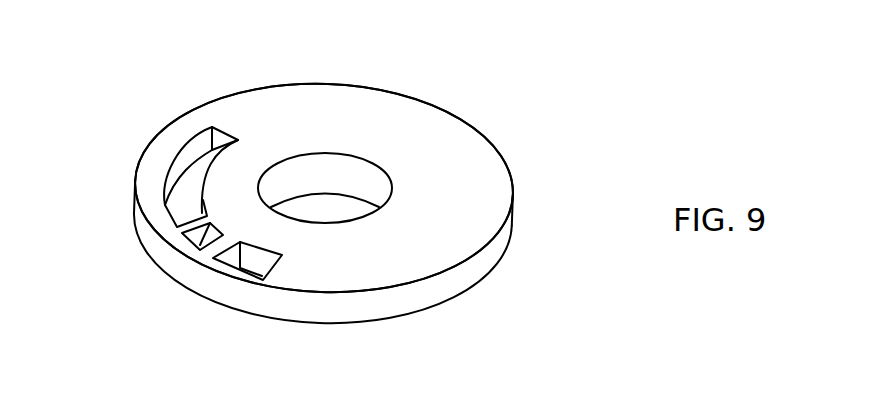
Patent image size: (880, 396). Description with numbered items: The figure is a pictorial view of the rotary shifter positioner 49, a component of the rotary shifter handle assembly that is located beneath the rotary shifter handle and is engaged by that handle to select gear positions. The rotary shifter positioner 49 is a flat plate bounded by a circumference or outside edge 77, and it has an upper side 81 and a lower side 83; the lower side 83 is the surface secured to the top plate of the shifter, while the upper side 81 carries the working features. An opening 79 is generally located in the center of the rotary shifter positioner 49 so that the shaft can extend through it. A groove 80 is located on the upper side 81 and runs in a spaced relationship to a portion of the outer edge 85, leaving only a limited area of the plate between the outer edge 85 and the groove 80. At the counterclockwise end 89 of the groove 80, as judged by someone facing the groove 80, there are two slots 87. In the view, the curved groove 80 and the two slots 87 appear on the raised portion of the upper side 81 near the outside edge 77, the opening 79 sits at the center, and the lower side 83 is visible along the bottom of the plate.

The rotary shifter positioner 49 is at (443, 138).
The circumference or outside edge 77 is at (157, 134).
The opening 79 is at (358, 167).
The groove 80 is at (203, 135).
The upper side 81 is at (490, 183).
The lower side 83 is at (467, 288).
The outer edge 85 is at (135, 197).
The slots 87 is at (203, 247).
The counterclockwise end 89 is at (258, 286).